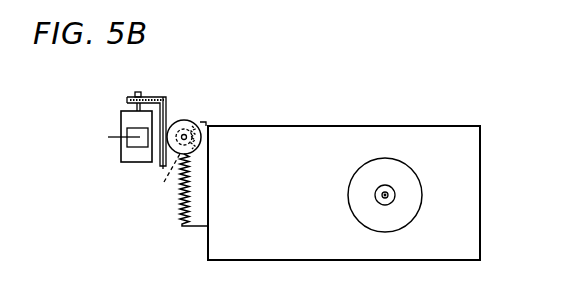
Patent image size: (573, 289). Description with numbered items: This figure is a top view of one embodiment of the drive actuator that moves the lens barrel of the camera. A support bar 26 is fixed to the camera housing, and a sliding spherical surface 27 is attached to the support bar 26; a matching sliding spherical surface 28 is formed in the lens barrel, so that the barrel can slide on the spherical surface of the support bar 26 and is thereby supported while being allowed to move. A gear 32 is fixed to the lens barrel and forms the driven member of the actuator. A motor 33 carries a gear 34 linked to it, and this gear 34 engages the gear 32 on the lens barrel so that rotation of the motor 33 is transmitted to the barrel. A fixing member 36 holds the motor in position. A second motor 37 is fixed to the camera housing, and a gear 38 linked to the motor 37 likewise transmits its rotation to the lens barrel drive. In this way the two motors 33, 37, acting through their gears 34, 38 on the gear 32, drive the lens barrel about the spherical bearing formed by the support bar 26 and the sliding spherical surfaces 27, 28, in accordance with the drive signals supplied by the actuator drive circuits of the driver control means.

The support bar 26 is at (393, 200).
The sliding spherical surface 27 is at (394, 192).
The sliding spherical surface 28 is at (408, 170).
The gear 32 is at (196, 228).
The motor 33 is at (193, 121).
The gear 34 is at (160, 177).
The fixing member 36 is at (170, 101).
The motor 37 is at (121, 155).
The gear 38 is at (132, 94).